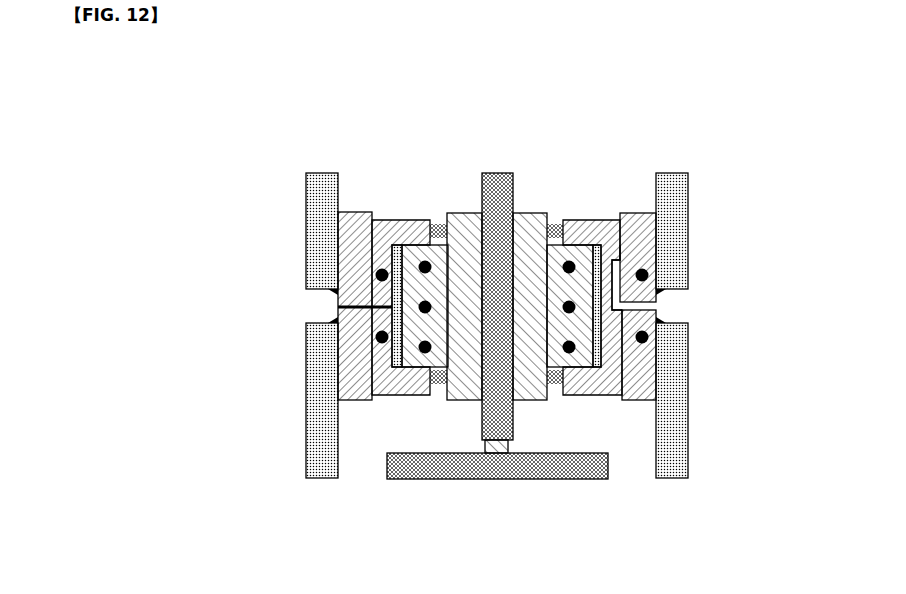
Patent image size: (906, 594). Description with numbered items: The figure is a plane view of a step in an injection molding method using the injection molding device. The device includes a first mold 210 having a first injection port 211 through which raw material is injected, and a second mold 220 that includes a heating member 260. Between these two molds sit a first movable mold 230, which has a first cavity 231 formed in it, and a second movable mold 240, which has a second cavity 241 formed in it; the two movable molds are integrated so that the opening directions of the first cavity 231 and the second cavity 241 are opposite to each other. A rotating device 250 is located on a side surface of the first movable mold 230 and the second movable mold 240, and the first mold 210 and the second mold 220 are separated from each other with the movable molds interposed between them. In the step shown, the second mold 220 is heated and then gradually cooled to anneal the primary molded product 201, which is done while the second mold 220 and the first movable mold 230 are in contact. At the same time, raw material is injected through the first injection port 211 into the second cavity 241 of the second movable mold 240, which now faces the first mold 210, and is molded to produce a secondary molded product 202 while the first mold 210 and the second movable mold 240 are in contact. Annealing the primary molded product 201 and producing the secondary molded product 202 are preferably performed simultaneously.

The primary molded product 201 is at (397, 257).
The secondary molded product 202 is at (600, 262).
The first mold 210 is at (636, 188).
The first injection port 211 is at (617, 258).
The second mold 220 is at (363, 192).
The first movable mold 230 is at (452, 192).
The first cavity 231 is at (405, 257).
The second movable mold 240 is at (537, 192).
The second cavity 241 is at (608, 368).
The rotating device 250 is at (503, 466).
The heating member 260 is at (423, 350).